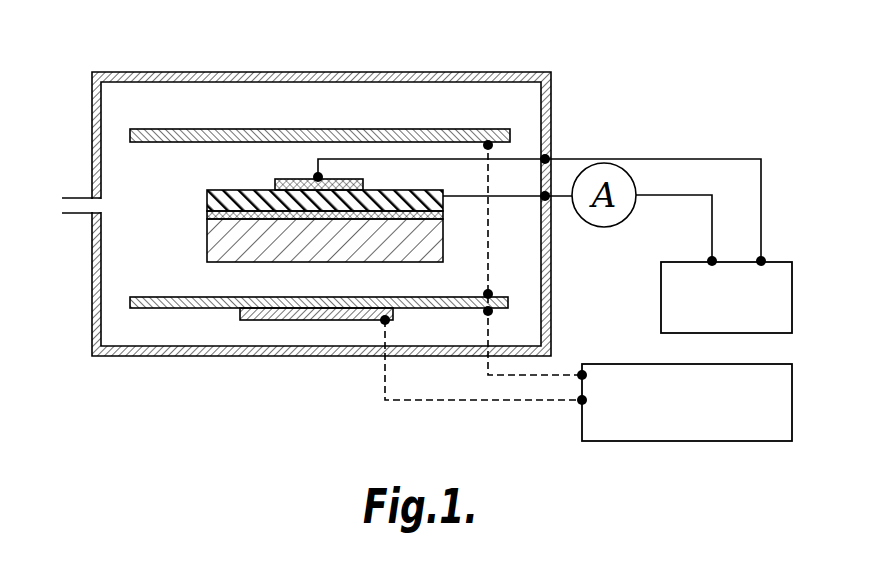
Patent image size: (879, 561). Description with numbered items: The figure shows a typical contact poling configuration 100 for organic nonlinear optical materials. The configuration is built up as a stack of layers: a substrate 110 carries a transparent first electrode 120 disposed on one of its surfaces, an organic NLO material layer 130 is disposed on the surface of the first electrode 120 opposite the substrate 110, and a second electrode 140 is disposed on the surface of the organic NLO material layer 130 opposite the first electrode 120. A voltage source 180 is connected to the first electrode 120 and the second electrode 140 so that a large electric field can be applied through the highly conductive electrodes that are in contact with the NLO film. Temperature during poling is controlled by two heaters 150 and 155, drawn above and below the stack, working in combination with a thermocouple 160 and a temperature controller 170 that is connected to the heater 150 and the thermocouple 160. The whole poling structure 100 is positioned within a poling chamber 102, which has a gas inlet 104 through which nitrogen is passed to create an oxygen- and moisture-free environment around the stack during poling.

The contact poling configuration 100 is at (494, 115).
The poling chamber 102 is at (283, 357).
The gas inlet 104 is at (68, 205).
The substrate 110 is at (207, 240).
The transparent first electrode 120 is at (207, 214).
The organic NLO material layer 130 is at (207, 190).
The second electrode 140 is at (278, 182).
The heater 150 is at (215, 297).
The heater 155 is at (282, 130).
The thermocouple 160 is at (246, 319).
The temperature controller 170 is at (792, 397).
The voltage source 180 is at (792, 290).